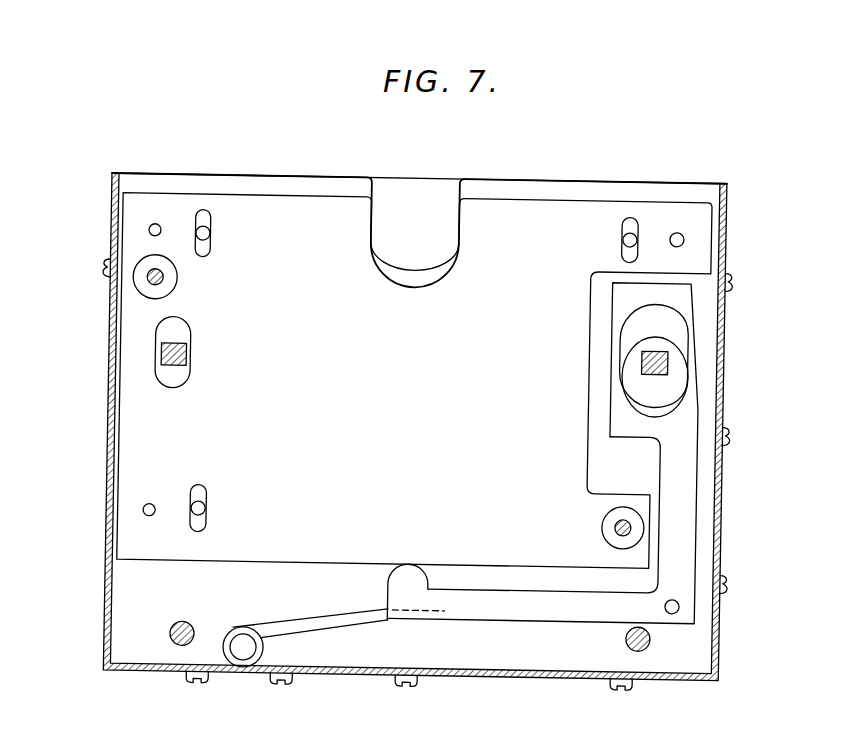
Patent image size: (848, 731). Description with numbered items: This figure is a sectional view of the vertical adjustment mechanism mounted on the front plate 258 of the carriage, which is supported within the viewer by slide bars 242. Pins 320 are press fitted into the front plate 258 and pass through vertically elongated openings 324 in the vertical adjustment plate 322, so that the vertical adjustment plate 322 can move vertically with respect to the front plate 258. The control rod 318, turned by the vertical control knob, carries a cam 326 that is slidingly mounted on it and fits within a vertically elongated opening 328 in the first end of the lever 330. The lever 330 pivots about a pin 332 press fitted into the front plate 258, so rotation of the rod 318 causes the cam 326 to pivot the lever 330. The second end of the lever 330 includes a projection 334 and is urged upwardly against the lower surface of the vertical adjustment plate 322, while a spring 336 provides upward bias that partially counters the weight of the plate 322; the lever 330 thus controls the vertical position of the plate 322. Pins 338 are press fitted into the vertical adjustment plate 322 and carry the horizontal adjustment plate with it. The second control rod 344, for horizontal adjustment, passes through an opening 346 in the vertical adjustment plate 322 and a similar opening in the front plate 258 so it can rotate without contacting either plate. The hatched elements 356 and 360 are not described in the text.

The front plate 258 is at (725, 187).
The vertical adjustment plate 322 is at (504, 215).
The lever 330 is at (621, 232).
The projection 334 is at (400, 580).
The spring 336 is at (336, 612).
The pins 320 is at (197, 231).
The vertically elongated openings 324 is at (211, 230).
The pins 338 is at (150, 227).
The circular recess 360 is at (141, 261).
The pin 356 is at (165, 277).
The opening 346 is at (190, 322).
The control rod 344 is at (190, 356).
The slide bars 242 is at (189, 620).
The vertically elongated opening 328 is at (678, 312).
The cam 326 is at (668, 388).
The control rod 318 is at (670, 355).
The pin 332 is at (687, 598).